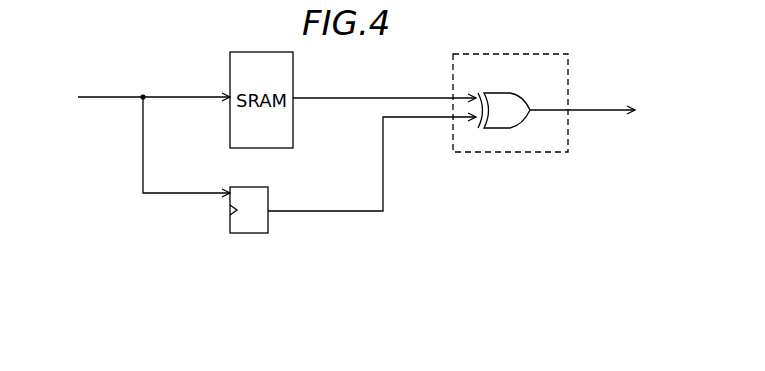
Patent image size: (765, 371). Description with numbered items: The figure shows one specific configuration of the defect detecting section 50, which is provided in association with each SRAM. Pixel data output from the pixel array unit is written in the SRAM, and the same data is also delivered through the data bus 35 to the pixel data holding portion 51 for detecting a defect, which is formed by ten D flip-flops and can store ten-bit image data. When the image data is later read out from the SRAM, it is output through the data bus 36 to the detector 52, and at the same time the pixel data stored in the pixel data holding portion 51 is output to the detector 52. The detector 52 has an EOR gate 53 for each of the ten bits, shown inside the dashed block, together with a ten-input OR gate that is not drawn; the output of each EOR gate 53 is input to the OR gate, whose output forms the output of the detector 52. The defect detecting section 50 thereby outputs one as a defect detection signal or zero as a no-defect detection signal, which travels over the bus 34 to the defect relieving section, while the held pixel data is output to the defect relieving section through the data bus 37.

The bus 34 is at (602, 111).
The data bus 35 is at (165, 194).
The data bus 36 is at (348, 97).
The data bus 37 is at (327, 212).
The defect detecting section 50 is at (446, 235).
The pixel data holding portion for detecting a defect 51 is at (250, 194).
The detector 52 is at (495, 153).
The EOR gate 53 is at (510, 100).